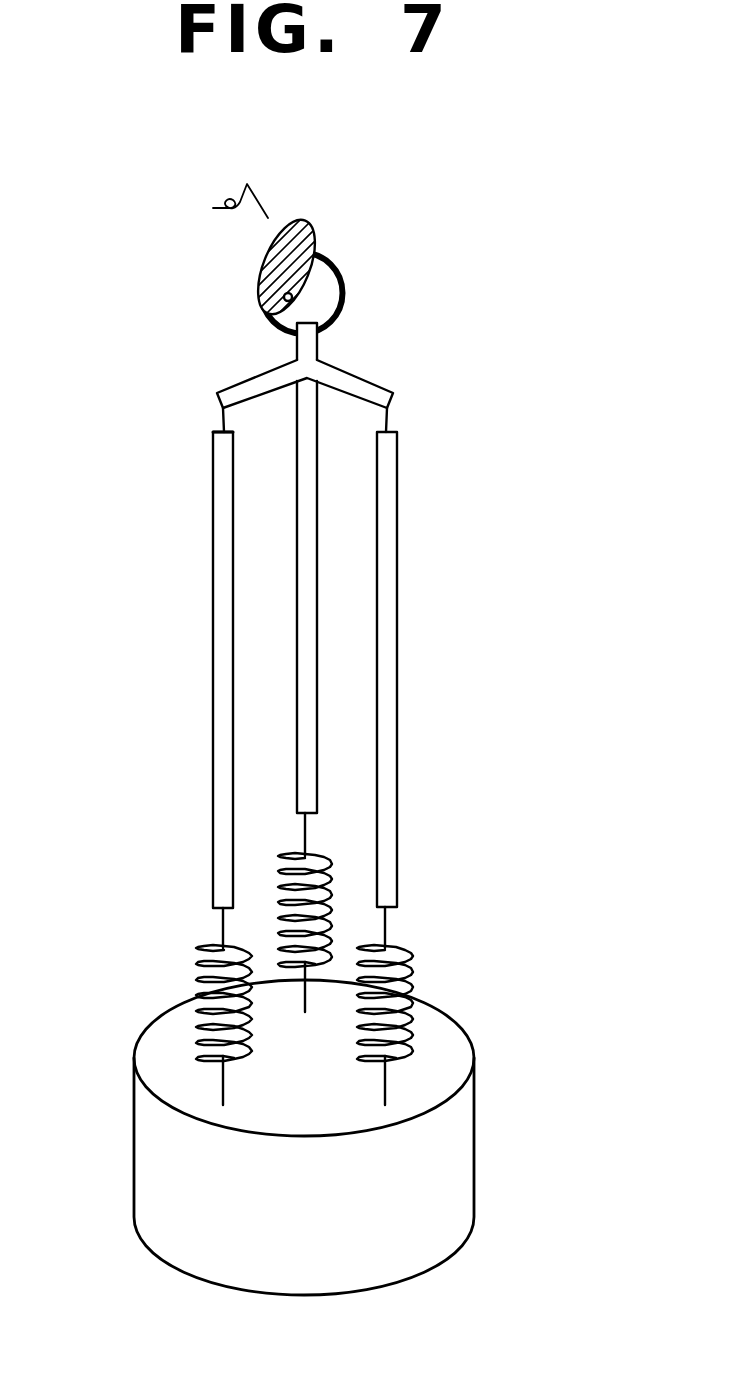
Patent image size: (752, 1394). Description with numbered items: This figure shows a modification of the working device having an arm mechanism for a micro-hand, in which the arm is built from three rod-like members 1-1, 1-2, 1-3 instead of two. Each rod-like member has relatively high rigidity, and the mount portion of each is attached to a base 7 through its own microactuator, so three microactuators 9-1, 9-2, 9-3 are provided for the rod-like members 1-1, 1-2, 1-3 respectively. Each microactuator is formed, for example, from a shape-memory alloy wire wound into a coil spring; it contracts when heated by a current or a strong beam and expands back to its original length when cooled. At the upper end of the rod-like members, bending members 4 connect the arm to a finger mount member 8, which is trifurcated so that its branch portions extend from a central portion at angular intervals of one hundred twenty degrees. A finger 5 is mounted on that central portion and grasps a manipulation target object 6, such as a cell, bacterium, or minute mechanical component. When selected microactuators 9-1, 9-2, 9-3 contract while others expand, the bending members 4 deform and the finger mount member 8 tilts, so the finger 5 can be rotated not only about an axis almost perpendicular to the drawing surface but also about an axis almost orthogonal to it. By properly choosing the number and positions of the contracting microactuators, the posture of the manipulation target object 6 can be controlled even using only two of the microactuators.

The rod-like member 1-1 is at (215, 735).
The rod-like member 1-2 is at (398, 635).
The rod-like member 1-3 is at (317, 552).
The bending member 4 is at (223, 422).
The finger 5 is at (352, 290).
The manipulation target object 6 is at (313, 220).
The base 7 is at (133, 1160).
The finger mount member 8 is at (360, 378).
The microactuator 9-1 is at (197, 970).
The microactuator 9-2 is at (413, 967).
The microactuator 9-3 is at (333, 858).